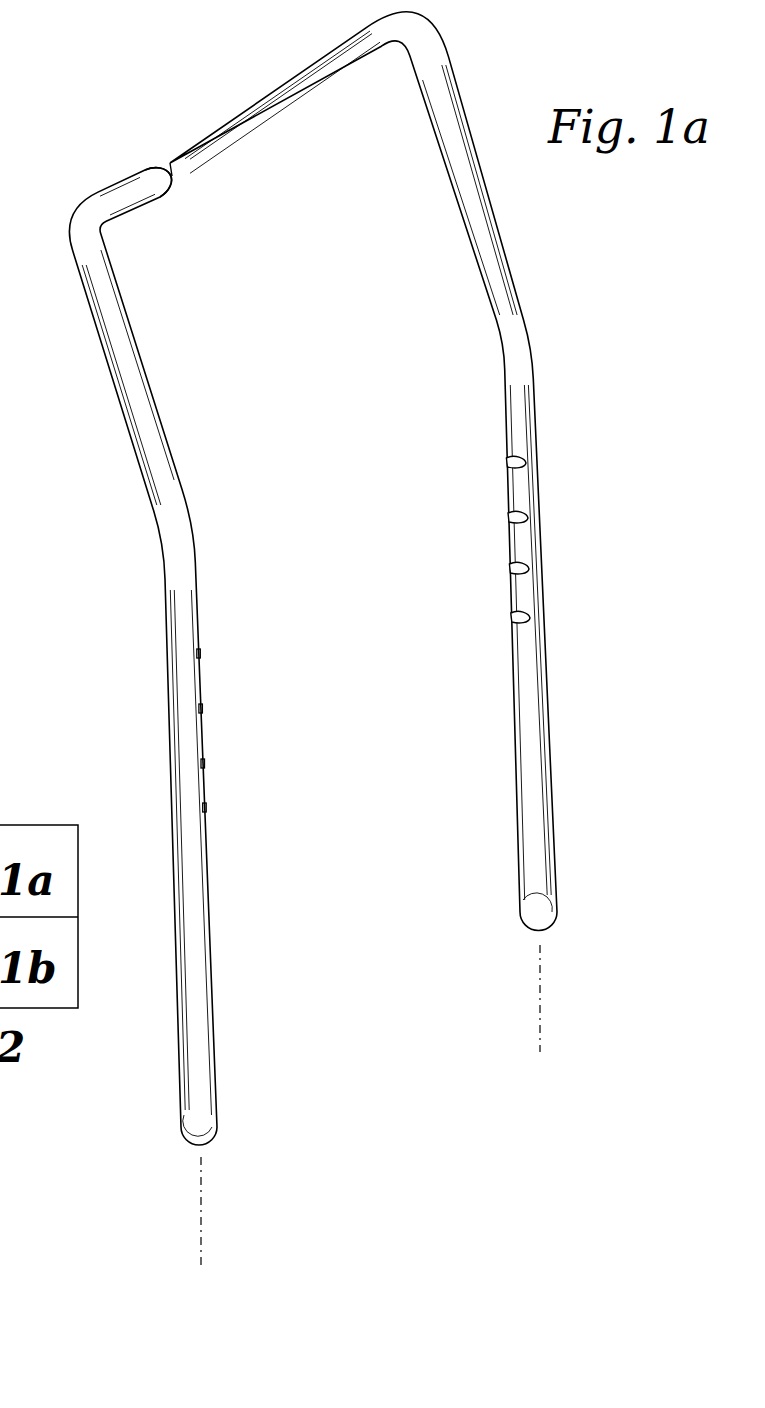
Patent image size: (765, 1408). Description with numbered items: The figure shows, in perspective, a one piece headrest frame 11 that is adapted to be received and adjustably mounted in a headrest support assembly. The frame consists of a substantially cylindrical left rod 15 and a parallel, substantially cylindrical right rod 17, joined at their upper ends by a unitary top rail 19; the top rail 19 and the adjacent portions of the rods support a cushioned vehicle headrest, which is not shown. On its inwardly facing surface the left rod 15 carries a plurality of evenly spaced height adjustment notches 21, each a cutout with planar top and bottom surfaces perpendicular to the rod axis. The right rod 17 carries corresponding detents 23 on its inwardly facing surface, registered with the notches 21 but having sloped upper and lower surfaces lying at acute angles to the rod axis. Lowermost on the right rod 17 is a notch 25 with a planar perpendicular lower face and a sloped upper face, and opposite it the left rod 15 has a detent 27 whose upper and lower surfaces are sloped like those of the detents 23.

The headrest frame 11 is at (278, 640).
The left rod 15 is at (153, 478).
The right rod 17 is at (495, 282).
The top rail 19 is at (190, 160).
The height adjustment notches 21 is at (203, 763).
The detents 23 is at (510, 569).
The lowermost notch 25 is at (513, 617).
The detent 27 is at (205, 807).